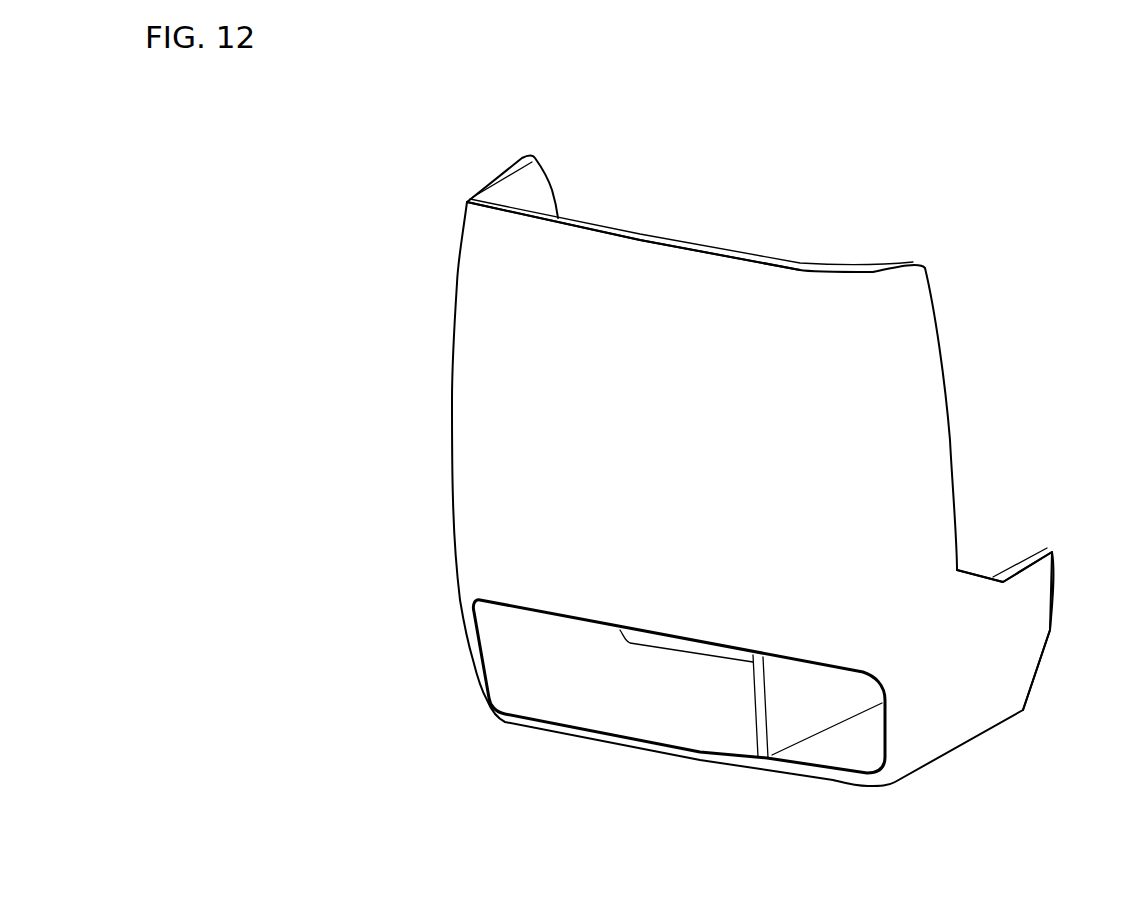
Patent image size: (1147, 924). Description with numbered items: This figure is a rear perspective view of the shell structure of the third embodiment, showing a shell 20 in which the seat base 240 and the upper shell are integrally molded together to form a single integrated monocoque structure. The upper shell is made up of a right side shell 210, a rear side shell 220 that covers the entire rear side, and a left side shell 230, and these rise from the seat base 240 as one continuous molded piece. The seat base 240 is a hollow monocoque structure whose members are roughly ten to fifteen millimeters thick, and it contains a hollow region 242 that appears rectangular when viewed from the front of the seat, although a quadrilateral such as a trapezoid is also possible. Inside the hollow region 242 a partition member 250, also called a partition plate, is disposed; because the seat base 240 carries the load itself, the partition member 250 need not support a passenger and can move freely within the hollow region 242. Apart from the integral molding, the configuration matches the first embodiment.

The shell 20 is at (902, 171).
The right side shell 210 is at (913, 377).
The rear side shell 220 is at (660, 237).
The left side shell 230 is at (490, 178).
The seat base 240 is at (962, 717).
The hollow region 242 is at (573, 688).
The partition member 250 is at (757, 753).